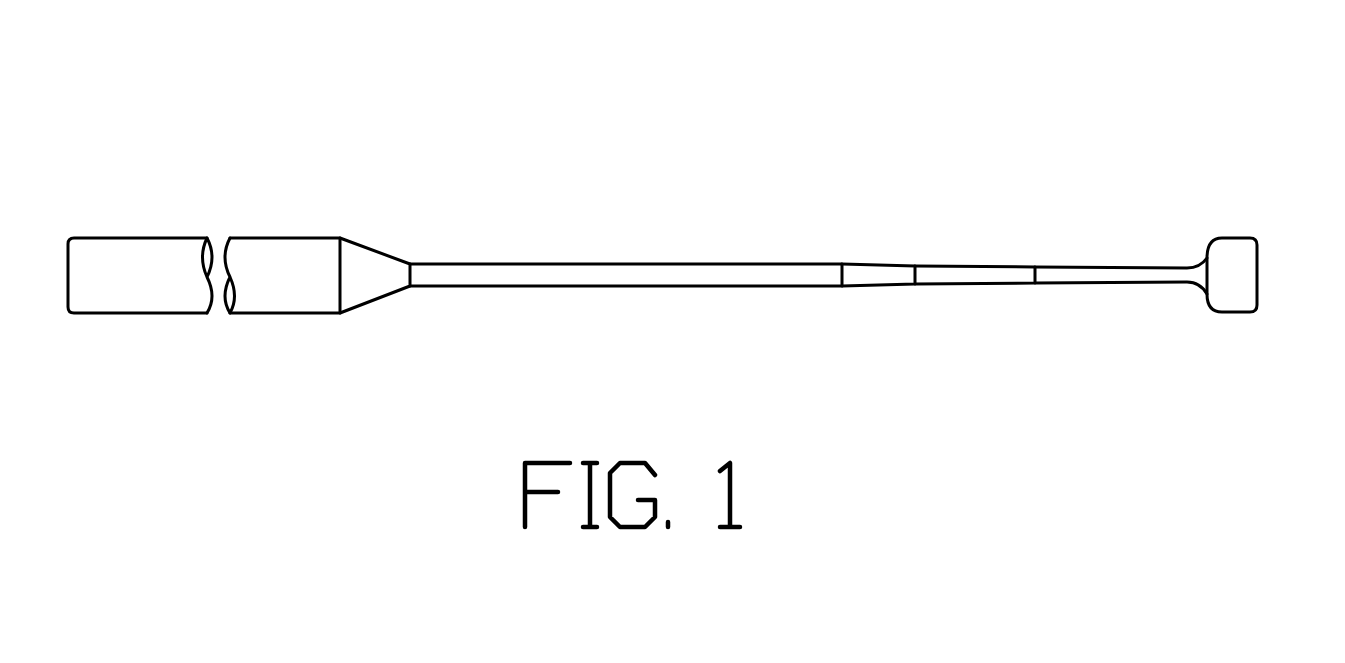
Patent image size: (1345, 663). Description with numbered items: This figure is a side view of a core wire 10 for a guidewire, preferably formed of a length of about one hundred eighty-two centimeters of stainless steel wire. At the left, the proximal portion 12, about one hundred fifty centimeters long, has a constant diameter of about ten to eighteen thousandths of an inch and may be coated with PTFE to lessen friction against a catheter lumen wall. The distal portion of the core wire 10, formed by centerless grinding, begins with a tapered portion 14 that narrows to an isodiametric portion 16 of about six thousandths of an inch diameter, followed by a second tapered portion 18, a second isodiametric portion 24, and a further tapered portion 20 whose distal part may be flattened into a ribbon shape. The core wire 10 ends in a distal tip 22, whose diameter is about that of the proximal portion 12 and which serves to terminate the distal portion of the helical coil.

The core wire 10 is at (837, 48).
The proximal portion 12 is at (348, 162).
The tapered portion 14 is at (432, 200).
The isodiametric portion 16 is at (672, 223).
The second tapered portion 18 is at (920, 205).
The second isodiametric portion 24 is at (1031, 335).
The tapered portion 20 is at (1130, 274).
The distal tip 22 is at (1265, 248).